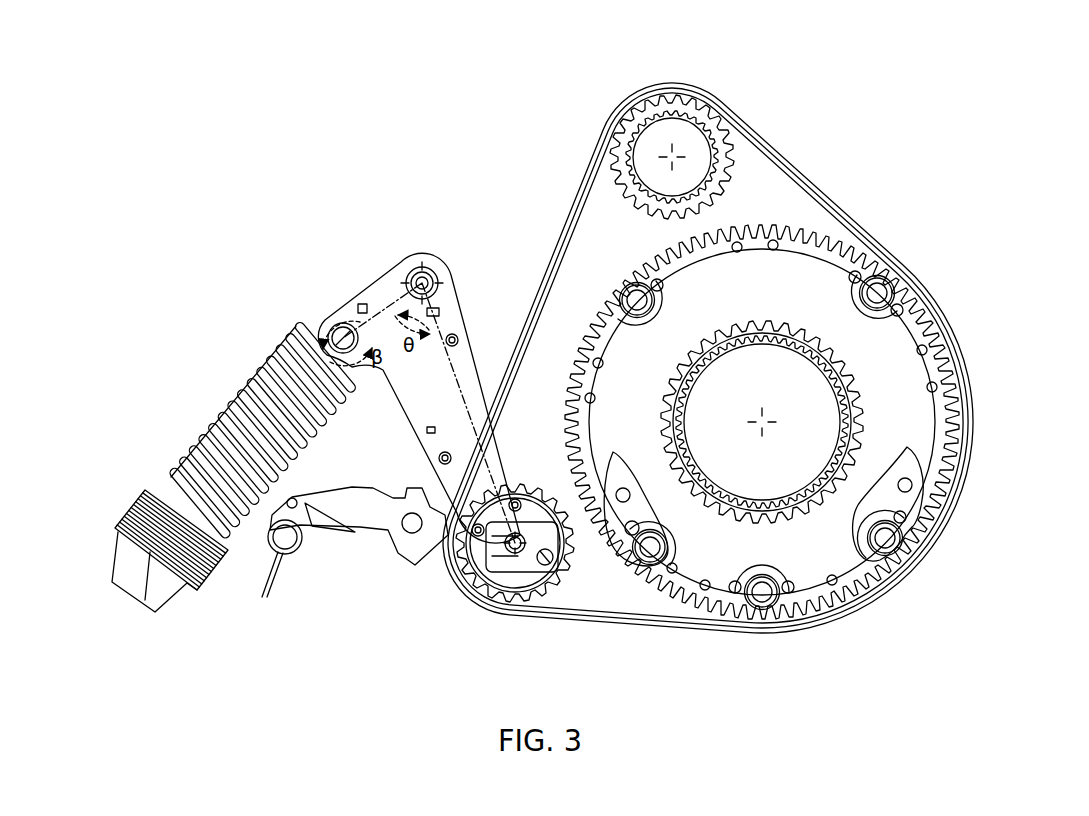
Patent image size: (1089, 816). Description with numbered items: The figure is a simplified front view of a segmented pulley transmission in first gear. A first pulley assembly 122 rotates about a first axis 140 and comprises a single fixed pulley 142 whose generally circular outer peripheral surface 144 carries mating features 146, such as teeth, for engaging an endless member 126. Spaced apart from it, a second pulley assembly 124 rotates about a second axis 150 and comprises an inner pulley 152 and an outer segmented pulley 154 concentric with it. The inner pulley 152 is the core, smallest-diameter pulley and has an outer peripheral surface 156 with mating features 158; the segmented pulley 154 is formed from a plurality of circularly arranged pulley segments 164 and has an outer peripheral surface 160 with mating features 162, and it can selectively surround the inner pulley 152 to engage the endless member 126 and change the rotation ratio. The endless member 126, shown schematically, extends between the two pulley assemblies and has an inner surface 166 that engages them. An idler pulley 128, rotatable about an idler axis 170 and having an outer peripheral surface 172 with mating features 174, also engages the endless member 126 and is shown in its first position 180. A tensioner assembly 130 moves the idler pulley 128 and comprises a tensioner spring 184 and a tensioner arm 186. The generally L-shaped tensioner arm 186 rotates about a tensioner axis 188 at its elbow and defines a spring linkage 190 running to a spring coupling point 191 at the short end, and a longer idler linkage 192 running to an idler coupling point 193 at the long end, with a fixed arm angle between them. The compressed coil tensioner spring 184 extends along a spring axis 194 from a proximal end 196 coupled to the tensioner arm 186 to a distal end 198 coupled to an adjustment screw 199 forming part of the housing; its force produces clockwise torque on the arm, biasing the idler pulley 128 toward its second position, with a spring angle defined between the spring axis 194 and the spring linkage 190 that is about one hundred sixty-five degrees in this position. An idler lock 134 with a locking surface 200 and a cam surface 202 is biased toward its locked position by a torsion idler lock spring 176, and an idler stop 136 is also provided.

The first pulley assembly 122 is at (668, 78).
The second pulley assembly 124 is at (1000, 476).
The endless member 126 is at (672, 614).
The idler pulley 128 is at (475, 584).
The tensioner assembly 130 is at (316, 276).
The idler lock 134 is at (342, 514).
The idler stop 136 is at (532, 572).
The first axis 140 is at (652, 157).
The fixed pulley 142 is at (698, 119).
The outer peripheral surface 144 is at (650, 118).
The mating features 146 is at (612, 174).
The second axis 150 is at (760, 399).
The inner pulley 152 is at (787, 340).
The segmented pulley 154 is at (808, 226).
The outer peripheral surface 156 is at (672, 366).
The mating features 158 is at (672, 437).
The outer peripheral surface 160 is at (668, 250).
The mating features 162 is at (640, 276).
The pulley segments 164 is at (818, 584).
The inner surface 166 is at (608, 602).
The idler axis 170 is at (518, 532).
The outer peripheral surface 172 is at (565, 562).
The mating features 174 is at (525, 570).
The idler lock spring 176 is at (285, 557).
The first position 180 is at (516, 614).
The tensioner spring 184 is at (237, 400).
The tensioner arm 186 is at (453, 481).
The tensioner axis 188 is at (428, 268).
The spring linkage 190 is at (382, 312).
The spring coupling point 191 is at (328, 336).
The idler linkage 192 is at (460, 383).
The idler coupling point 193 is at (510, 566).
The spring axis 194 is at (212, 440).
The proximal end 196 is at (356, 396).
The distal end 198 is at (150, 487).
The adjustment screw 199 is at (138, 564).
The locking surface 200 is at (390, 530).
The cam surface 202 is at (408, 562).